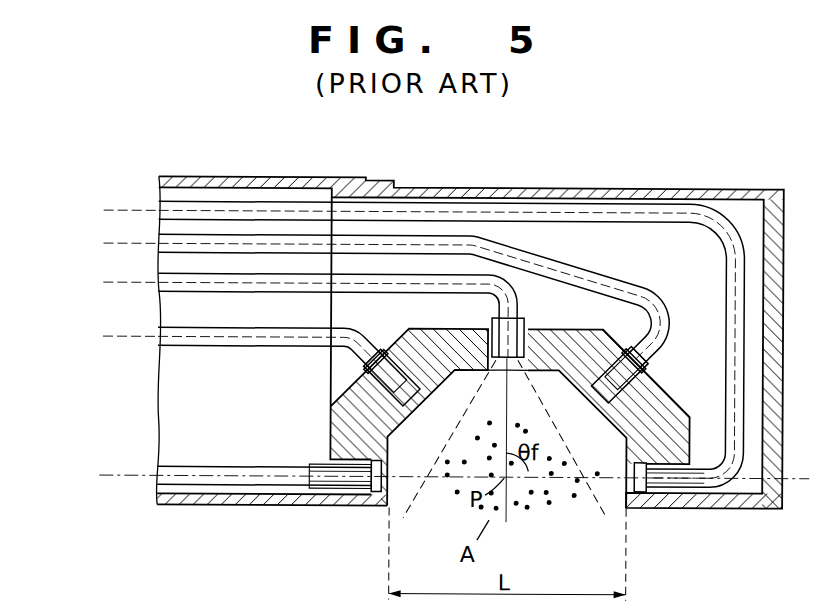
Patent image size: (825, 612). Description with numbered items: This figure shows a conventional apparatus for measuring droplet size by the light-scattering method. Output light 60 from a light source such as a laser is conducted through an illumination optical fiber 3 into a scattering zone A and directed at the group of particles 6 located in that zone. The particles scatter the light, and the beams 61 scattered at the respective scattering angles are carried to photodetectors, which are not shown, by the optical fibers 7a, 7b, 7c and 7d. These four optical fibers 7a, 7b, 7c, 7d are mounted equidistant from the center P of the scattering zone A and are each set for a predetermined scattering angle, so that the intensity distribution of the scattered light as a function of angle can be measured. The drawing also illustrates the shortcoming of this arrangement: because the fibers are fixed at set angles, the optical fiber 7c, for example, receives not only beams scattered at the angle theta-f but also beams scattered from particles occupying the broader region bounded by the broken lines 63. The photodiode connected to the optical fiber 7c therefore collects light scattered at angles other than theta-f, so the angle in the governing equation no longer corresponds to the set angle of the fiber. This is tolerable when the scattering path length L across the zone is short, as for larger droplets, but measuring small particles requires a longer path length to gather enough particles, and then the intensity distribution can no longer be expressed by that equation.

The illumination optical fiber 3 is at (190, 480).
The group of particles 6 is at (540, 515).
The optical fiber 7a is at (714, 207).
The optical fiber 7b is at (595, 271).
The optical fiber 7c is at (521, 300).
The optical fiber 7d is at (267, 348).
The output light 60 is at (118, 478).
The beams 61 is at (93, 200).
The broken lines 63 is at (502, 466).